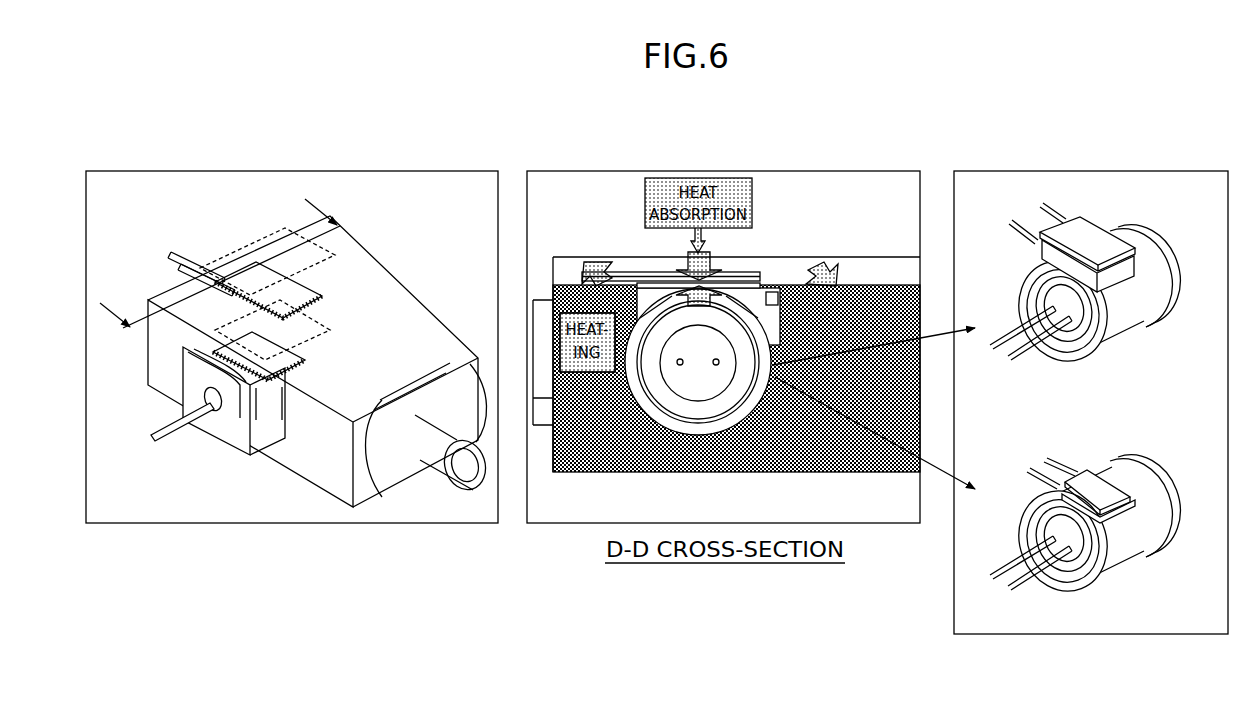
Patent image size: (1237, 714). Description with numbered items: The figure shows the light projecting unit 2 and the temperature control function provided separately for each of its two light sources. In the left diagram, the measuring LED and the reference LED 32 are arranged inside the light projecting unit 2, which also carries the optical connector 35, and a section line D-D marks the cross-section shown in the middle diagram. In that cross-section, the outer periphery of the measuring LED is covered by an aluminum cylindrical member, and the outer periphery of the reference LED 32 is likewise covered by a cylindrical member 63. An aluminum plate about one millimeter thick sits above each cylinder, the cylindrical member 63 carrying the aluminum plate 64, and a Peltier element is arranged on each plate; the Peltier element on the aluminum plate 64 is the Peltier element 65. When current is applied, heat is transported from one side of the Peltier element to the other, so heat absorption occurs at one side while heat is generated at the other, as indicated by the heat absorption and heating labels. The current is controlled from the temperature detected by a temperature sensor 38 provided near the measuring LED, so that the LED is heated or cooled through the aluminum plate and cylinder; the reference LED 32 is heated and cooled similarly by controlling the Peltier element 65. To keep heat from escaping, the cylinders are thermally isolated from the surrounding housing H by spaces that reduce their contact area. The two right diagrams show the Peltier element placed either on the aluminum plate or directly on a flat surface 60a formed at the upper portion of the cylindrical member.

The light projecting unit 2 is at (380, 262).
The reference LED 32 is at (208, 412).
The optical connector 35 is at (440, 462).
The temperature sensor 38 is at (773, 292).
The flat surface 60a is at (1118, 507).
The cylindrical member 63 is at (296, 400).
The aluminum plate 64 is at (244, 385).
The Peltier element 65 is at (205, 385).
The housing H is at (868, 348).